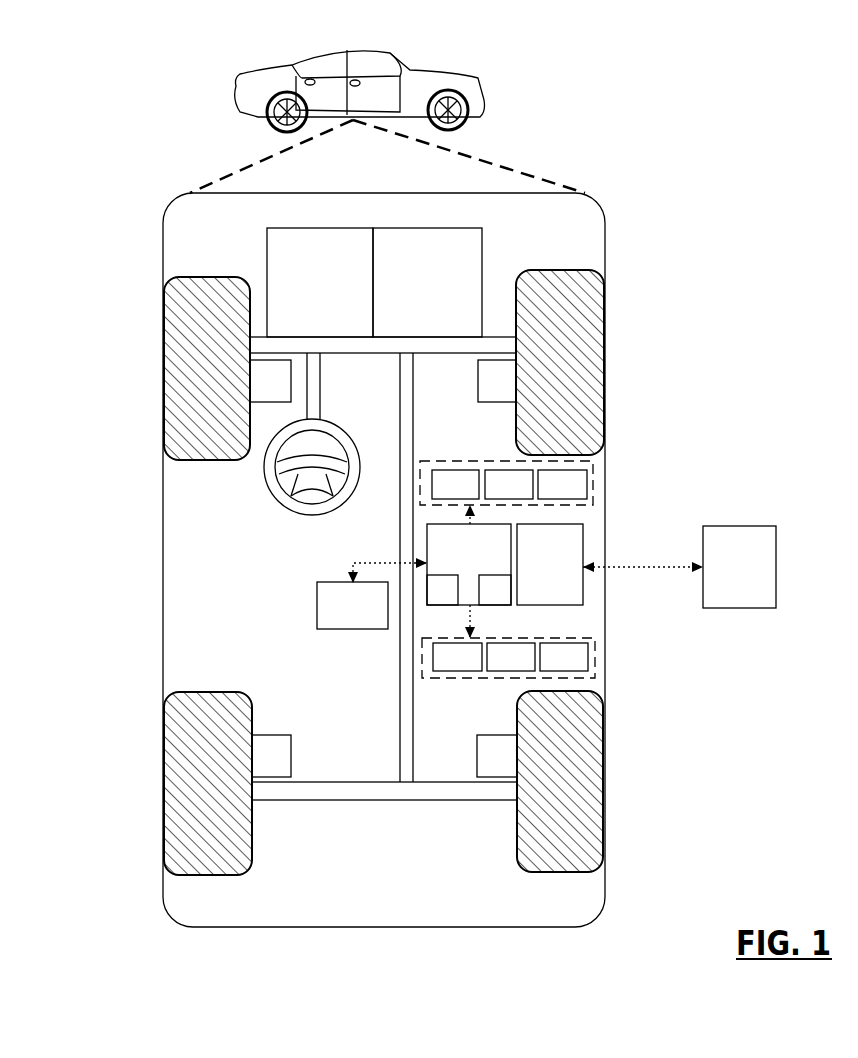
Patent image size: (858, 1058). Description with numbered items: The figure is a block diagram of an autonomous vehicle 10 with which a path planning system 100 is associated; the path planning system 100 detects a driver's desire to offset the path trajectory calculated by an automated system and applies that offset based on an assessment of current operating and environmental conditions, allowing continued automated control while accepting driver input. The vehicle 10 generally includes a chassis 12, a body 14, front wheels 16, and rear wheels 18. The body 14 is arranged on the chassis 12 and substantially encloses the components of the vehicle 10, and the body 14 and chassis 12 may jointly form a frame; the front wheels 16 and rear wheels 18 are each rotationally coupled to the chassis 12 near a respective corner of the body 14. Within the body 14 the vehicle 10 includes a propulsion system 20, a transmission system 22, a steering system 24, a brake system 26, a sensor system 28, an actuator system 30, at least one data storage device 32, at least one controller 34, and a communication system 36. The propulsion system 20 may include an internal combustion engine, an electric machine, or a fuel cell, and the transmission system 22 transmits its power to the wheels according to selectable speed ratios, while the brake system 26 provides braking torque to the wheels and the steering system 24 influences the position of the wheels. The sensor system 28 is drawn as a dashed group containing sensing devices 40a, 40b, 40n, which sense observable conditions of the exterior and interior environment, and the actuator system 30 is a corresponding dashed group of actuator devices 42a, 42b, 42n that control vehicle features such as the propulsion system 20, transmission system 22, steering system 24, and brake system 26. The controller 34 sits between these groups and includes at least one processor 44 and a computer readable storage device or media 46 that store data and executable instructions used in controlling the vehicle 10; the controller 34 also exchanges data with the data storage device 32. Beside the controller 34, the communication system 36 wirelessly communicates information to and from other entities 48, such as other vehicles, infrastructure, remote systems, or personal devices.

The vehicle 10 is at (237, 105).
The path planning system 100 is at (628, 202).
The chassis 12 is at (398, 722).
The body 14 is at (163, 545).
The front wheels 16 is at (204, 277).
The rear wheels 18 is at (222, 876).
The propulsion system 20 is at (320, 282).
The transmission system 22 is at (427, 282).
The steering system 24 is at (348, 382).
The brake system 26 is at (383, 568).
The sensor system 28 is at (450, 461).
The actuator system 30 is at (455, 678).
The data storage device 32 is at (352, 605).
The controller 34 is at (469, 564).
The communication system 36 is at (550, 564).
The sensing device 40a is at (455, 484).
The sensing device 40b is at (509, 484).
The sensing device 40n is at (562, 484).
The actuator device 42a is at (457, 657).
The actuator device 42b is at (511, 657).
The actuator device 42n is at (564, 657).
The processor 44 is at (442, 590).
The computer readable storage device or media 46 is at (495, 590).
The other entities 48 is at (739, 567).